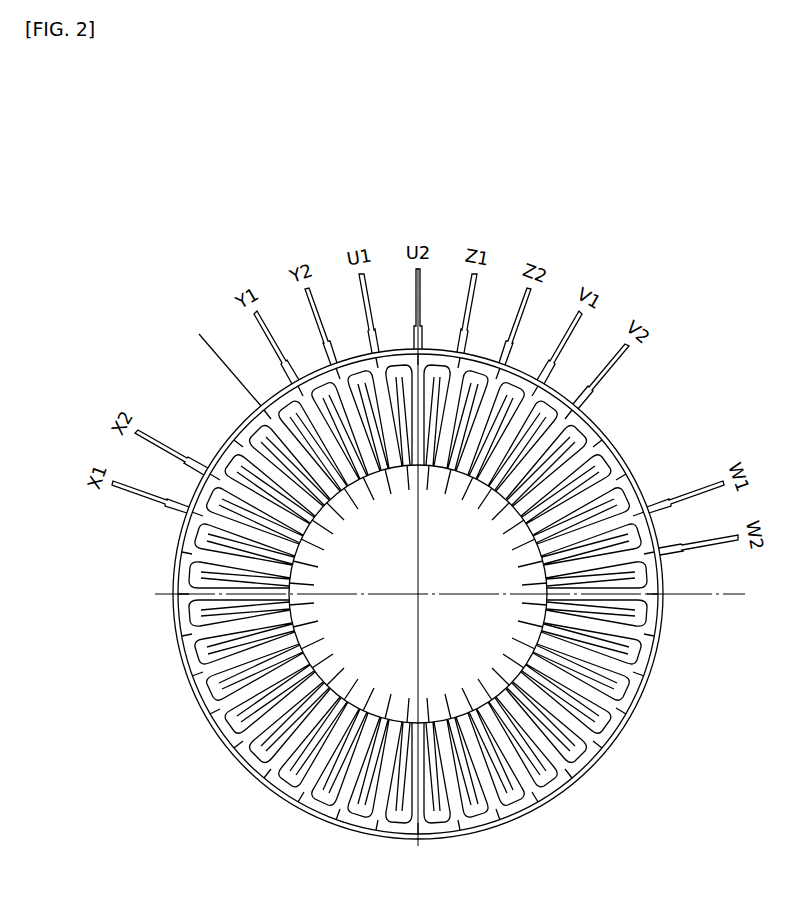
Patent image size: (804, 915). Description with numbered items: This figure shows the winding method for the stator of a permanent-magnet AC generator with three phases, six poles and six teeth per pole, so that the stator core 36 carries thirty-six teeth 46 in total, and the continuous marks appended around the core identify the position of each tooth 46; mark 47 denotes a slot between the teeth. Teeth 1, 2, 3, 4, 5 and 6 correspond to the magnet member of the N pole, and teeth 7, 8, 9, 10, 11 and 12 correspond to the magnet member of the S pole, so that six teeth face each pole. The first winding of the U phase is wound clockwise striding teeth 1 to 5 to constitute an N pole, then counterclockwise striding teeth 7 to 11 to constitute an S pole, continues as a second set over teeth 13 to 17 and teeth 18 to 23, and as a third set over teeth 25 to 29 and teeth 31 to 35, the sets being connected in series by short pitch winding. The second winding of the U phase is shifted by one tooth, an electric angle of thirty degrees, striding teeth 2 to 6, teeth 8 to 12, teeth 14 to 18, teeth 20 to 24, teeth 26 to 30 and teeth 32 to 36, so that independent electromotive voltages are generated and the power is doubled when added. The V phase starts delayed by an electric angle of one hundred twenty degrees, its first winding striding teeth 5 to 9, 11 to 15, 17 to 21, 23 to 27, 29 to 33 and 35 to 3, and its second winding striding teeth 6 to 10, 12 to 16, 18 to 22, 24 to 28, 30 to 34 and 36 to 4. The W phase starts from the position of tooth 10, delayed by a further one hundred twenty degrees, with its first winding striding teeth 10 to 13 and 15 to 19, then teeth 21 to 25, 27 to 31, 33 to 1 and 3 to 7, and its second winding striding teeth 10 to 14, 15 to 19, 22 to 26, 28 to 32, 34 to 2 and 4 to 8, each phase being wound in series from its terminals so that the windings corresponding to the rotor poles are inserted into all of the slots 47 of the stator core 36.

The tooth 1 is at (399, 427).
The tooth 2 is at (437, 427).
The tooth 3 is at (466, 432).
The tooth 4 is at (493, 441).
The tooth 5 is at (517, 455).
The tooth 6 is at (539, 473).
The tooth 7 is at (557, 494).
The tooth 8 is at (570, 519).
The tooth 9 is at (579, 545).
The tooth 10 is at (584, 576).
The tooth 11 is at (584, 611).
The tooth 12 is at (579, 642).
The tooth 13 is at (564, 665).
The tooth 14 is at (557, 693).
The tooth 15 is at (539, 715).
The tooth 16 is at (517, 733).
The tooth 17 is at (493, 746).
The tooth 18 is at (466, 755).
The tooth 19 is at (435, 760).
The tooth 20 is at (400, 760).
The tooth 21 is at (369, 755).
The tooth 22 is at (343, 746).
The tooth 23 is at (318, 733).
The tooth 24 is at (297, 715).
The tooth 25 is at (279, 693).
The tooth 26 is at (265, 669).
The tooth 27 is at (256, 642).
The tooth 28 is at (251, 611).
The tooth 29 is at (251, 576).
The tooth 30 is at (256, 545).
The tooth 31 is at (265, 519).
The tooth 32 is at (279, 494).
The tooth 33 is at (297, 473).
The tooth 34 is at (318, 455).
The tooth 35 is at (343, 441).
The stator core 36 is at (704, 634).
The teeth 46 is at (607, 672).
The slot 47 is at (607, 709).